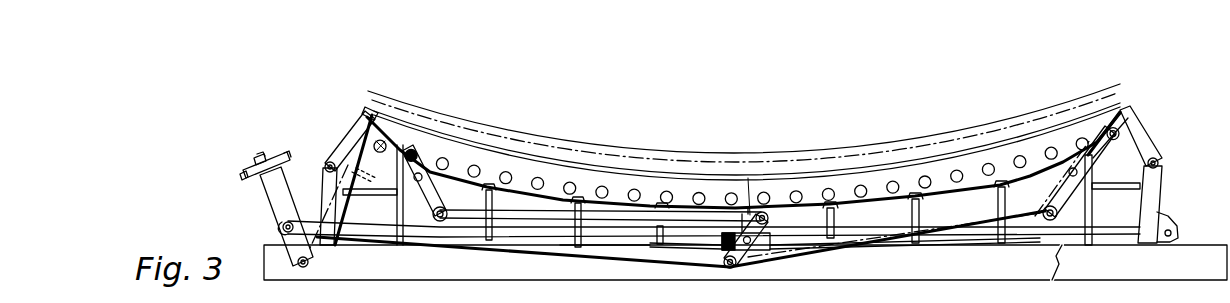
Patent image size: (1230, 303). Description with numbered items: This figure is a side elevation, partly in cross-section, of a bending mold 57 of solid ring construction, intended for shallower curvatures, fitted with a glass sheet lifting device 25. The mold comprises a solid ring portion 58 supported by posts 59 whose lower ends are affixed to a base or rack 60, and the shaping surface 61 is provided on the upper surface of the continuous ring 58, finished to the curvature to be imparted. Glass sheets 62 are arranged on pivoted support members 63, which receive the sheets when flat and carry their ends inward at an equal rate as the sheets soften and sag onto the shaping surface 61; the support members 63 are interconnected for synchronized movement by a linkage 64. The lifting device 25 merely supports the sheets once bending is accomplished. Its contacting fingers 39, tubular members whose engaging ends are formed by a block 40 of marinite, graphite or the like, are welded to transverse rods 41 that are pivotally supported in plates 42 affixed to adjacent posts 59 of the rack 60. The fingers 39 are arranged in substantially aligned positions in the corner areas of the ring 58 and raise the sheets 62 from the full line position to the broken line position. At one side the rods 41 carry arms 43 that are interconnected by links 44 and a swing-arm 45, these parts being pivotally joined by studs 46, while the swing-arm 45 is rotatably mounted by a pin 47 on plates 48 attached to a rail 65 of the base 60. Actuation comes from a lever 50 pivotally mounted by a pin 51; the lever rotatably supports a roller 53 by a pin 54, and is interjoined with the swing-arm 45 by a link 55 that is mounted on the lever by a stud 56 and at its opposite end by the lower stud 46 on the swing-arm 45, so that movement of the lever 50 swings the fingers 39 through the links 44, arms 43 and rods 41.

The lifting device 25 is at (276, 151).
The contacting fingers 39 is at (437, 124).
The block 40 is at (1092, 127).
The rods 41 is at (1092, 168).
The plates 42 is at (410, 197).
The arms 43 is at (432, 203).
The links 44 is at (513, 217).
The swing-arm 45 is at (740, 263).
The studs 46 is at (769, 217).
The pin 47 is at (749, 247).
The plates 48 is at (763, 243).
The lever 50 is at (272, 198).
The pin 51 is at (312, 262).
The roller 53 is at (241, 176).
The pin 54 is at (257, 157).
The link 55 is at (385, 240).
The stud 56 is at (283, 227).
The bending mold 57 is at (331, 131).
The solid ring portion 58 is at (517, 178).
The posts 59 is at (488, 184).
The base or rack 60 is at (862, 260).
The shaping surface 61 is at (774, 178).
The glass sheets 62 is at (607, 177).
The pivoted support members 63 is at (347, 132).
The linkage 64 is at (853, 233).
The rail 65 is at (605, 268).